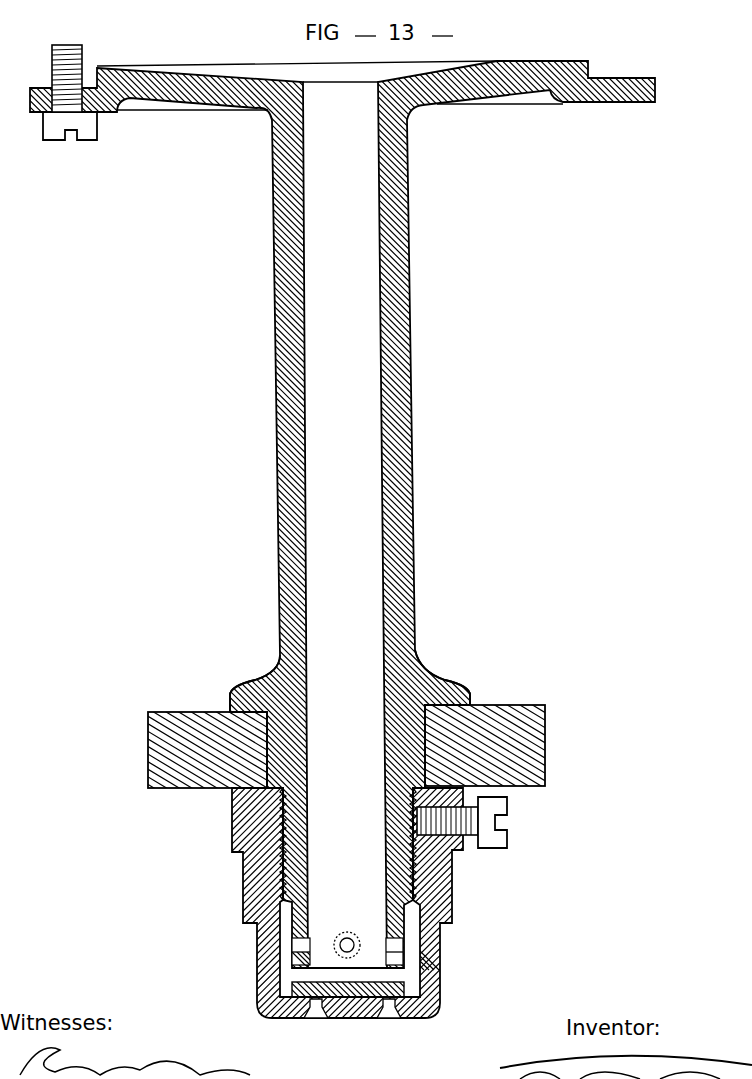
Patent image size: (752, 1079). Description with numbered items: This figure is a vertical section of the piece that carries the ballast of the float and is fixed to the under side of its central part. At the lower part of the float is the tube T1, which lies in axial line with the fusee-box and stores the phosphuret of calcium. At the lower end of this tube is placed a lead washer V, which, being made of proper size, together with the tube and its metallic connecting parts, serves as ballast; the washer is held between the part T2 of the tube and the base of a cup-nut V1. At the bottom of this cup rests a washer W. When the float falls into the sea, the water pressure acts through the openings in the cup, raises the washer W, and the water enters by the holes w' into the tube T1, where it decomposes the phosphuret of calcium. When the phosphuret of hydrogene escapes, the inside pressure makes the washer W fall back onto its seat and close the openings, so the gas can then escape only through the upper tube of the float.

The tube T1 is at (376, 527).
The part of the tube T2 is at (468, 690).
The lead washer V is at (544, 754).
The cup-nut V1 is at (456, 912).
The washer W is at (358, 1015).
The holes w' is at (362, 978).